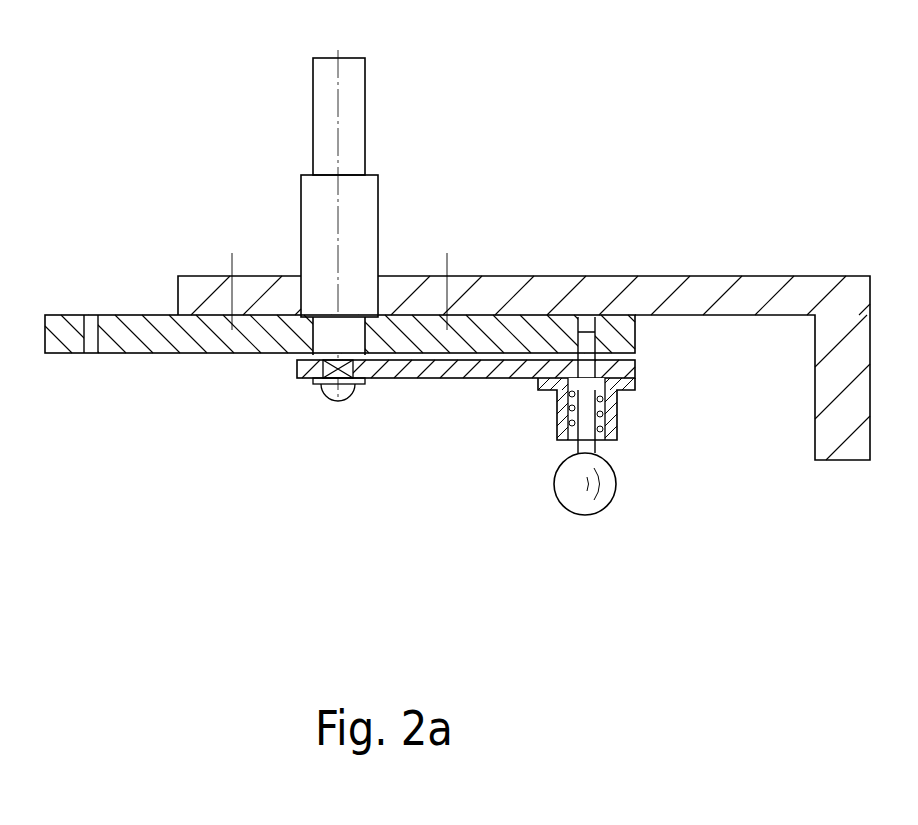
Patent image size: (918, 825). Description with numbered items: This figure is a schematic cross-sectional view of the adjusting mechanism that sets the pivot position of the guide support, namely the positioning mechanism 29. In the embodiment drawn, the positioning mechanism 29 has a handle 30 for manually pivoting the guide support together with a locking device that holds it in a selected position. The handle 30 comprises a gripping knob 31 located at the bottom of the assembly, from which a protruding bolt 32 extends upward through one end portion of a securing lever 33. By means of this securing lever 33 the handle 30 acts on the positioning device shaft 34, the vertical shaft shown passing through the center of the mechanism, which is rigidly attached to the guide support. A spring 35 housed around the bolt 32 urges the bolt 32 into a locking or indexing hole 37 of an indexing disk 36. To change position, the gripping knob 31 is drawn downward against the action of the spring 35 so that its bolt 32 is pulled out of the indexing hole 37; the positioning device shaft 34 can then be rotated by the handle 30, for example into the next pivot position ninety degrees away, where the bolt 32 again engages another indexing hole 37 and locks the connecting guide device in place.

The positioning mechanism 29 is at (606, 507).
The handle 30 is at (651, 492).
The gripping knob 31 is at (630, 529).
The bolt 32 is at (575, 447).
The securing lever 33 is at (445, 370).
The positioning device shaft 34 is at (348, 158).
The spring 35 is at (617, 417).
The indexing disk 36 is at (140, 337).
The indexing hole 37 is at (591, 318).